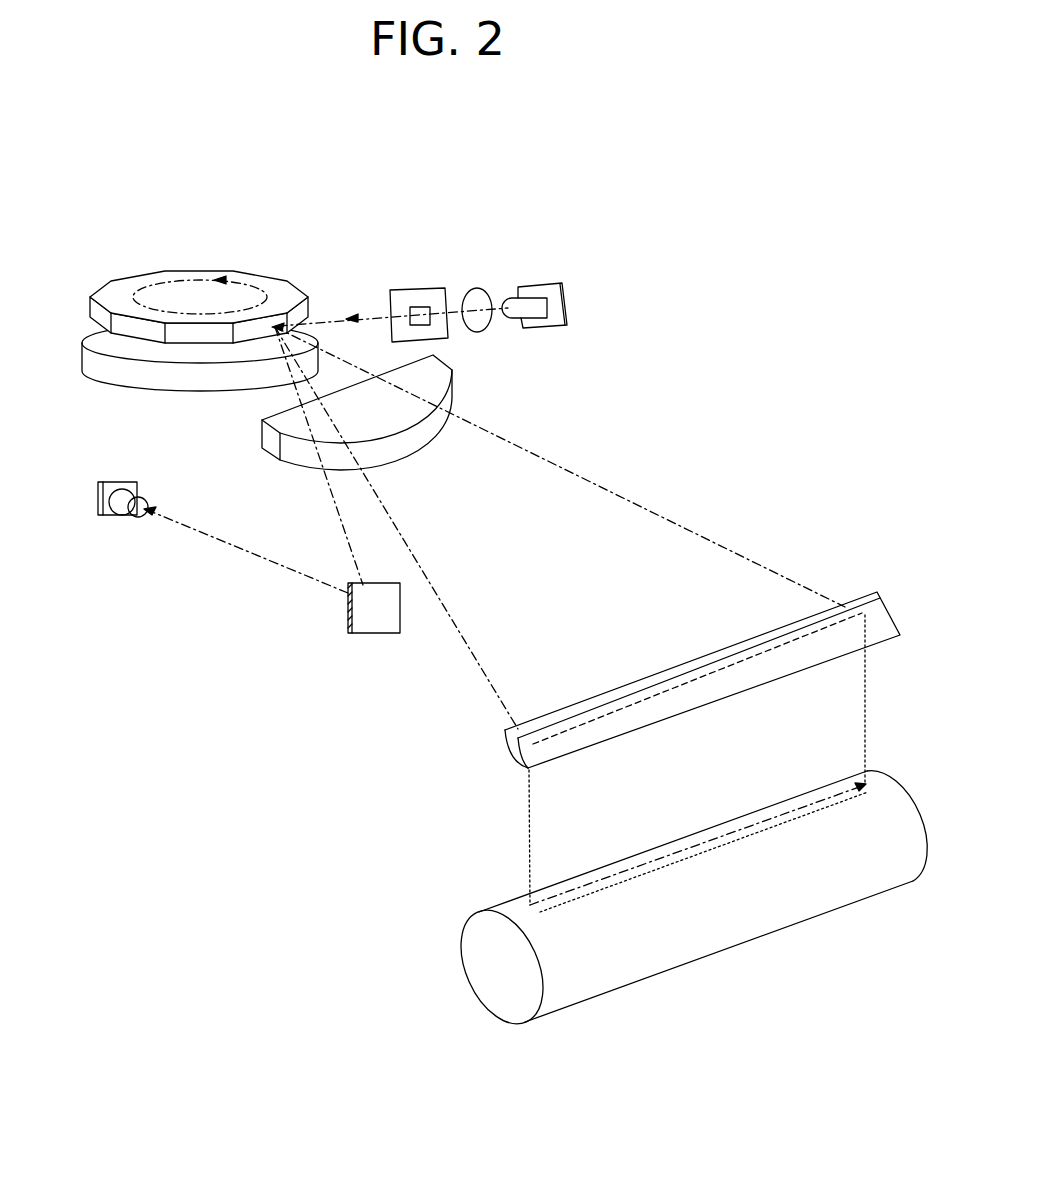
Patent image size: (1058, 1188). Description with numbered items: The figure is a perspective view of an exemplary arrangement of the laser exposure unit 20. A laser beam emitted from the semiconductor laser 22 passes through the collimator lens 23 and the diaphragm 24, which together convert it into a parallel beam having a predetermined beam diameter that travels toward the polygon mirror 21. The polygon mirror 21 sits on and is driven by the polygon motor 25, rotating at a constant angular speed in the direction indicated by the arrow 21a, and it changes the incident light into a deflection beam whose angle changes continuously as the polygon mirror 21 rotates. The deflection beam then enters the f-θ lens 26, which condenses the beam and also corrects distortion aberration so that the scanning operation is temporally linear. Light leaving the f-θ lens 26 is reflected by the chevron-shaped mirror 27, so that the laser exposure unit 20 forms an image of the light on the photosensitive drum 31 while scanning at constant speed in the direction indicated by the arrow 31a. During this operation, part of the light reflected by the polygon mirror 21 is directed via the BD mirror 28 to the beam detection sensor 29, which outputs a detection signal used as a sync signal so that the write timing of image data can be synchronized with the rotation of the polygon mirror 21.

The laser exposure unit 20 is at (247, 950).
The polygon mirror 21 is at (195, 271).
The arrow 21a is at (138, 286).
The semiconductor laser 22 is at (568, 309).
The collimator lens 23 is at (472, 295).
The diaphragm 24 is at (413, 300).
The polygon motor 25 is at (118, 367).
The f-θ lens 26 is at (437, 378).
The chevron-shaped mirror 27 is at (513, 763).
The BD mirror 28 is at (367, 627).
The beam detection (BD) sensor 29 is at (115, 518).
The photosensitive drum 31 is at (647, 904).
The arrow 31a is at (670, 865).